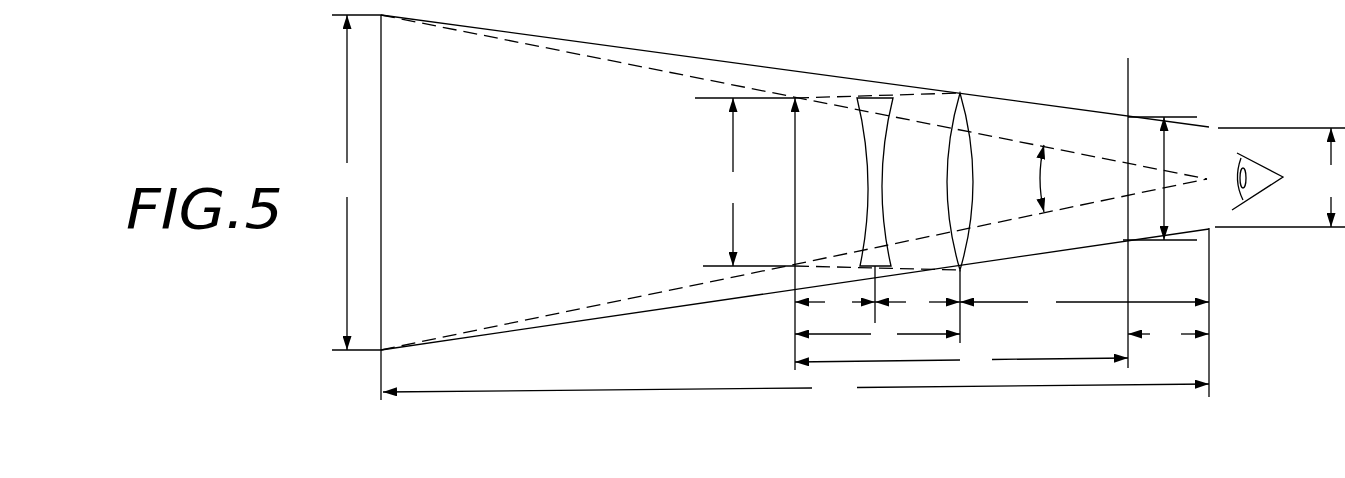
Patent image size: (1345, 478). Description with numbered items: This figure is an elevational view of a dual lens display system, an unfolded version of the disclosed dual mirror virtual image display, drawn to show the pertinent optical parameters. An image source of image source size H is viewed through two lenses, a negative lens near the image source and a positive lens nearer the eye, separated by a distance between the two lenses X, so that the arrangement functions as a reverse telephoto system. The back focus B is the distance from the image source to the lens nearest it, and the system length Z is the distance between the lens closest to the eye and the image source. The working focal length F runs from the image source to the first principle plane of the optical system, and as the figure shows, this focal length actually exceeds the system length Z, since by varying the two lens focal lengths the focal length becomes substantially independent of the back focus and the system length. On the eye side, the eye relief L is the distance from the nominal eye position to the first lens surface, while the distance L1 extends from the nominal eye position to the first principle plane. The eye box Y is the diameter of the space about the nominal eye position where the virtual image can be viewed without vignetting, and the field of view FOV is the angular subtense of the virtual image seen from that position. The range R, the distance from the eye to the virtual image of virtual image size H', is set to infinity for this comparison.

The virtual image size H' is at (347, 182).
The image source size H is at (731, 182).
The back focus B is at (835, 303).
The distance between the two lenses X is at (917, 303).
The system length Z is at (877, 335).
The eye relief L is at (1084, 303).
The distance from the nominal eye position to the first principle plane L1 is at (1168, 336).
The working focal length F is at (961, 361).
The range R is at (796, 389).
The field of view FOV is at (1074, 178).
The eye box Y is at (1280, 177).